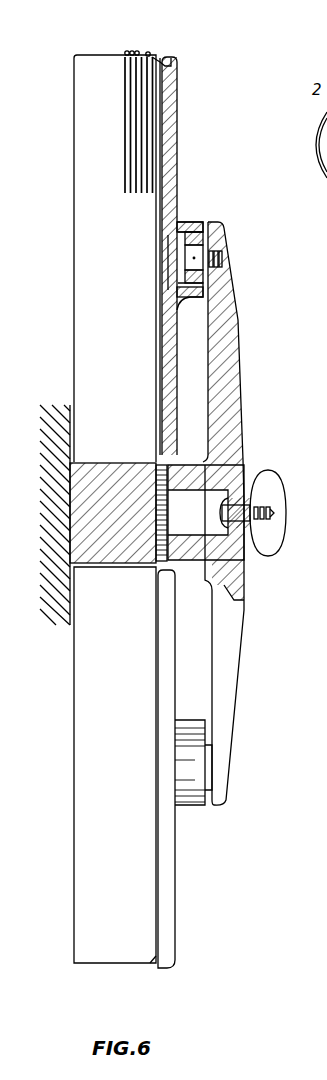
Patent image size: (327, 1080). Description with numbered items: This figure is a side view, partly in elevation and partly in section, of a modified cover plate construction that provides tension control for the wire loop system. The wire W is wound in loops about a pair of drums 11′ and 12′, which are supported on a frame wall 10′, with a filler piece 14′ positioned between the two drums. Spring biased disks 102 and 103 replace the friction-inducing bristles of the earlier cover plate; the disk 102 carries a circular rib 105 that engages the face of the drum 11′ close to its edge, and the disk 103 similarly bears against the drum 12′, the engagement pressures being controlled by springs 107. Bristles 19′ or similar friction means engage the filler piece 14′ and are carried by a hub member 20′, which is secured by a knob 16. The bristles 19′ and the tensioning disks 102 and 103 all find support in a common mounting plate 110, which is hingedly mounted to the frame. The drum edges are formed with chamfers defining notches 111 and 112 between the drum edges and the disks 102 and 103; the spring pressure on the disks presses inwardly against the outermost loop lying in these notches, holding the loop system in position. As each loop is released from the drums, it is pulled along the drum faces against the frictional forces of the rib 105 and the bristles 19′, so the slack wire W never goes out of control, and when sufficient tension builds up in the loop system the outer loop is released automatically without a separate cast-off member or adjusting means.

The wall 10′ is at (56, 600).
The drum 11′ is at (94, 62).
The drum 12′ is at (92, 965).
The filler piece 14′ is at (78, 480).
The knob 16 is at (278, 492).
The bristles 19′ is at (172, 476).
The hub member 20′ is at (244, 482).
The wire W is at (140, 52).
The spring biased disk 102 is at (178, 68).
The spring biased disk 103 is at (176, 965).
The circular rib 105 is at (170, 59).
The spring 107 is at (182, 232).
The mounting plate 110 is at (232, 352).
The notch 111 is at (158, 60).
The notch 112 is at (152, 964).